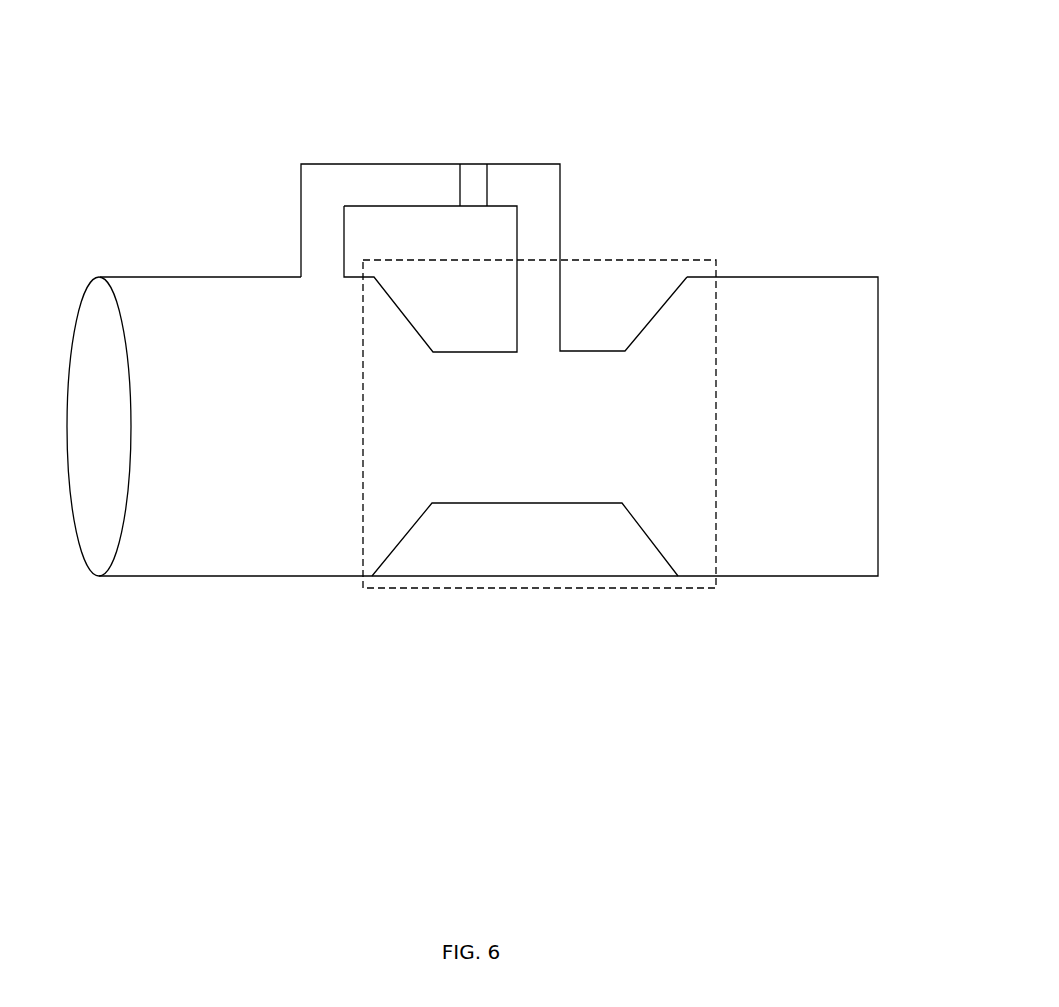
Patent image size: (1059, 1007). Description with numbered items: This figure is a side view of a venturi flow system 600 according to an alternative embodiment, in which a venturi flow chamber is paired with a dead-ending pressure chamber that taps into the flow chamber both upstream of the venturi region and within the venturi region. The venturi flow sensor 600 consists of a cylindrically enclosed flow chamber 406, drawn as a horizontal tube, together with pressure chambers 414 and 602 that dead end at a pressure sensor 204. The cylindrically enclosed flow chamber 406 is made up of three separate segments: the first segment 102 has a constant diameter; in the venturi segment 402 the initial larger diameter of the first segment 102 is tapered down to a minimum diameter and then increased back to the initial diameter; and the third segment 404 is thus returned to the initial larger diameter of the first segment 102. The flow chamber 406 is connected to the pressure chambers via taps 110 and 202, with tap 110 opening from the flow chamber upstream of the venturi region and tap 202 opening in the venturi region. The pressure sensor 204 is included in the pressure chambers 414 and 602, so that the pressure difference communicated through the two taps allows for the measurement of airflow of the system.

The venturi flow system 600 is at (683, 106).
The first segment 102 is at (163, 553).
The tap 110 is at (313, 253).
The pressure sensor 204 is at (478, 180).
The pressure chamber 602 is at (515, 187).
The pressure chamber 414 is at (442, 188).
The tap 202 is at (540, 282).
The venturi segment 402 is at (463, 569).
The third segment 404 is at (758, 577).
The cylindrically enclosed flow chamber 406 is at (71, 573).